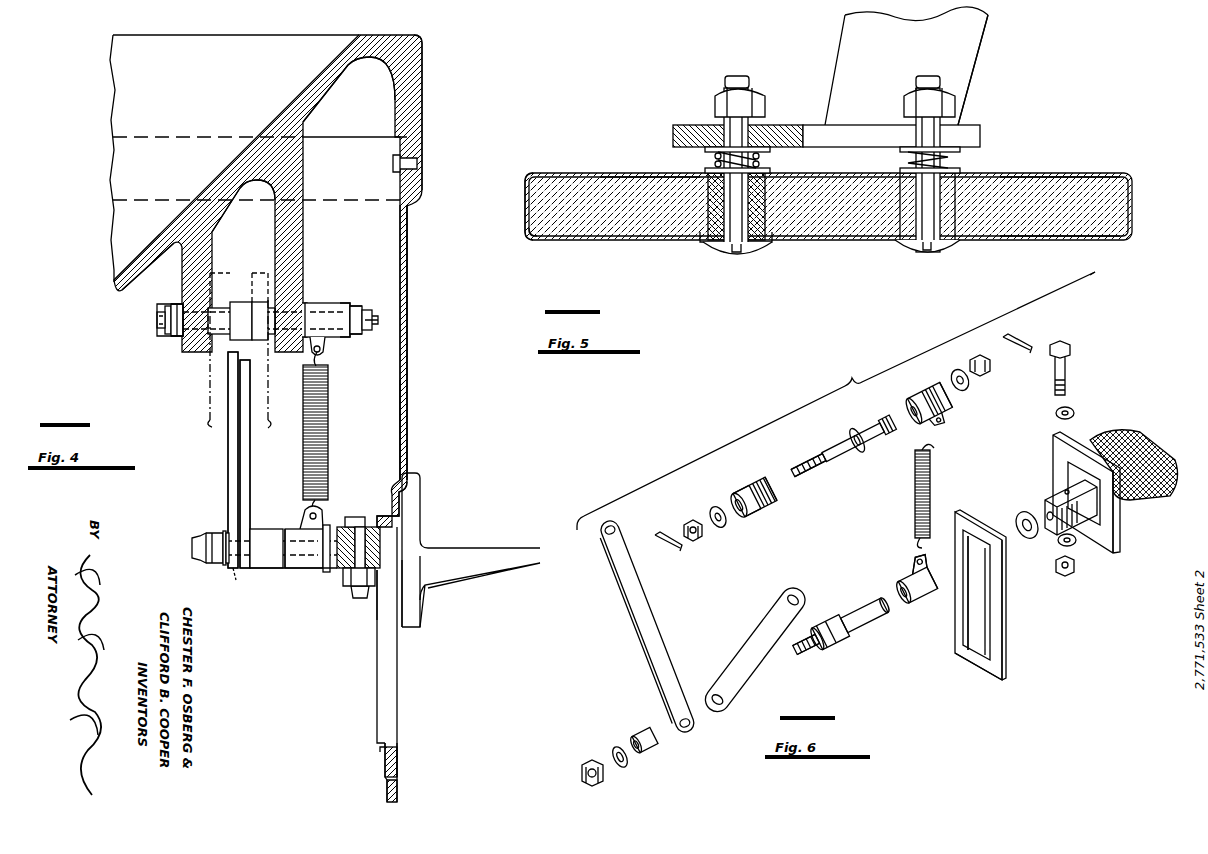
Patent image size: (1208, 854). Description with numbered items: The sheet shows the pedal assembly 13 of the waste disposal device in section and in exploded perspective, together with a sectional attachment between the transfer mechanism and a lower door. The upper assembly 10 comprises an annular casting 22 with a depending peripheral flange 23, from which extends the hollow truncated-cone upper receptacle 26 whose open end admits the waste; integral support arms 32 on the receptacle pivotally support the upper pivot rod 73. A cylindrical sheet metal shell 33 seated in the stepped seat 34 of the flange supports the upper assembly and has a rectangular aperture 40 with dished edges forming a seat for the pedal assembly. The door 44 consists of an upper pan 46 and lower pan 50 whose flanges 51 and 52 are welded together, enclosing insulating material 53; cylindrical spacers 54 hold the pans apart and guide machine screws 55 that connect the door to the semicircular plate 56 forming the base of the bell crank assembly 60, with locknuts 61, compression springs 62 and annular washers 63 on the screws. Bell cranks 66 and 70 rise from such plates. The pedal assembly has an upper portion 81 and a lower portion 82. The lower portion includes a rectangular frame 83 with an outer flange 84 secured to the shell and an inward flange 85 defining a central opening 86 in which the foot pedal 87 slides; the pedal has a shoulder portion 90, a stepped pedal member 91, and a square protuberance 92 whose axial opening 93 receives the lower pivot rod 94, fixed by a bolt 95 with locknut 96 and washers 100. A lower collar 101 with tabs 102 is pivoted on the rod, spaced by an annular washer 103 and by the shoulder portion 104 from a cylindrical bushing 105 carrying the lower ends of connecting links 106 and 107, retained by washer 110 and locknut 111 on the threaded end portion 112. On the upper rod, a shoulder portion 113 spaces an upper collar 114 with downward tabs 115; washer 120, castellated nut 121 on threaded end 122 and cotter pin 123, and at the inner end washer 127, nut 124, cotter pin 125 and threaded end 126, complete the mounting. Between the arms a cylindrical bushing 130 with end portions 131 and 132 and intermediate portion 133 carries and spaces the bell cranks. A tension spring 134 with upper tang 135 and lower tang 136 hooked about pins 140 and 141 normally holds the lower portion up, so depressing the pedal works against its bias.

In FIG. 4, the upper assembly 10 is at (409, 384).
In FIG. 4, the pedal assembly 13 is at (382, 413).
In FIG. 6, the pedal assembly 13 is at (1153, 363).
In FIG. 4, the annular casting 22 is at (270, 31).
In FIG. 4, the peripheral flange 23 is at (422, 104).
In FIG. 4, the upper receptacle 26 is at (150, 247).
In FIG. 4, the support arms 32 is at (214, 232).
In FIG. 4, the sheet metal shell 33 is at (406, 262).
In FIG. 4, the stepped seat 34 is at (392, 150).
In FIG. 4, the rectangular aperture 40 is at (390, 490).
In FIG. 5, the lower door 44 is at (1138, 210).
In FIG. 5, the upper pan 46 is at (1072, 176).
In FIG. 5, the lower pan 50 is at (1045, 240).
In FIG. 5, the downwardly disposed peripheral flange 51 is at (541, 240).
In FIG. 5, the upwardly disposed peripheral flange 52 is at (525, 200).
In FIG. 5, the insulating material 53 is at (648, 238).
In FIG. 5, the cylindrical spacers 54 is at (762, 228).
In FIG. 5, the machine screws 55 is at (745, 255).
In FIG. 5, the semicircular plate 56 is at (673, 128).
In FIG. 5, the bell crank assembly 60 is at (978, 86).
In FIG. 5, the locknuts 61 is at (752, 90).
In FIG. 5, the compression springs 62 is at (715, 158).
In FIG. 5, the annular washers 63 is at (770, 125).
In FIG. 4, the bell crank 66 is at (252, 418).
In FIG. 5, the bell crank 66 is at (975, 58).
In FIG. 4, the bell crank 70 is at (208, 423).
In FIG. 4, the upper pivot rod 73 is at (155, 314).
In FIG. 6, the upper pivot rod 73 is at (834, 446).
In FIG. 4, the upper portion 81 is at (155, 337).
In FIG. 4, the lower portion 82 is at (304, 627).
In FIG. 4, the rectangular frame 83 is at (398, 698).
In FIG. 6, the rectangular frame 83 is at (968, 682).
In FIG. 4, the outer flange 84 is at (400, 762).
In FIG. 6, the outer flange 84 is at (1003, 634).
In FIG. 4, the inwardly disposed flange 85 is at (383, 745).
In FIG. 6, the inwardly disposed flange 85 is at (958, 662).
In FIG. 4, the central rectangular opening 86 is at (377, 652).
In FIG. 6, the central rectangular opening 86 is at (976, 606).
In FIG. 4, the foot pedal 87 is at (422, 500).
In FIG. 6, the foot pedal 87 is at (1156, 510).
In FIG. 4, the shoulder portion 90 is at (404, 580).
In FIG. 6, the shoulder portion 90 is at (1070, 476).
In FIG. 4, the pedal member 91 is at (497, 548).
In FIG. 6, the pedal member 91 is at (1150, 444).
In FIG. 4, the square protuberance 92 is at (378, 575).
In FIG. 6, the square protuberance 92 is at (1080, 530).
In FIG. 6, the axial opening 93 is at (1045, 506).
In FIG. 4, the lower pivot rod 94 is at (262, 576).
In FIG. 6, the lower pivot rod 94 is at (842, 640).
In FIG. 4, the bolt 95 is at (358, 600).
In FIG. 6, the bolt 95 is at (1068, 372).
In FIG. 4, the locknut 96 is at (348, 588).
In FIG. 6, the locknut 96 is at (1070, 575).
In FIG. 4, the washers 100 is at (345, 518).
In FIG. 6, the washers 100 is at (1075, 413).
In FIG. 4, the lower collar 101 is at (290, 570).
In FIG. 6, the lower collar 101 is at (932, 600).
In FIG. 4, the tabs 102 is at (297, 520).
In FIG. 6, the tabs 102 is at (908, 582).
In FIG. 4, the annular washer 103 is at (326, 574).
In FIG. 6, the annular washer 103 is at (1018, 520).
In FIG. 4, the shoulder portion 104 is at (266, 532).
In FIG. 6, the shoulder portion 104 is at (830, 624).
In FIG. 4, the cylindrical bushing 105 is at (233, 578).
In FIG. 6, the cylindrical bushing 105 is at (648, 731).
In FIG. 4, the connecting link 106 is at (252, 470).
In FIG. 6, the connecting link 106 is at (650, 608).
In FIG. 4, the connecting link 107 is at (228, 470).
In FIG. 6, the connecting link 107 is at (755, 612).
In FIG. 4, the annular washer 110 is at (222, 538).
In FIG. 6, the annular washer 110 is at (628, 766).
In FIG. 4, the locknut 111 is at (226, 562).
In FIG. 6, the locknut 111 is at (590, 758).
In FIG. 4, the threaded end portion 112 is at (190, 545).
In FIG. 6, the threaded end portion 112 is at (800, 656).
In FIG. 4, the shoulder portion 113 is at (305, 310).
In FIG. 6, the shoulder portion 113 is at (858, 433).
In FIG. 4, the upper collar 114 is at (312, 303).
In FIG. 6, the upper collar 114 is at (920, 383).
In FIG. 4, the tabs 115 is at (342, 342).
In FIG. 6, the tabs 115 is at (940, 404).
In FIG. 4, the washer 120 is at (353, 335).
In FIG. 6, the washer 120 is at (972, 384).
In FIG. 4, the castellated nut 121 is at (354, 305).
In FIG. 6, the castellated nut 121 is at (978, 357).
In FIG. 4, the threaded outer end portion 122 is at (370, 310).
In FIG. 6, the threaded outer end portion 122 is at (890, 424).
In FIG. 4, the cotter pin 123 is at (380, 320).
In FIG. 6, the cotter pin 123 is at (1022, 347).
In FIG. 4, the castellated nut 124 is at (172, 330).
In FIG. 6, the castellated nut 124 is at (690, 521).
In FIG. 4, the cotter pin 125 is at (160, 323).
In FIG. 6, the cotter pin 125 is at (675, 552).
In FIG. 4, the threaded end portion 126 is at (166, 310).
In FIG. 6, the threaded end portion 126 is at (803, 470).
In FIG. 4, the washer 127 is at (178, 305).
In FIG. 6, the washer 127 is at (720, 507).
In FIG. 4, the cylindrical bushing 130 is at (236, 300).
In FIG. 6, the cylindrical bushing 130 is at (748, 485).
In FIG. 4, the end portion 131 is at (222, 340).
In FIG. 6, the end portion 131 is at (748, 516).
In FIG. 4, the end portion 132 is at (262, 340).
In FIG. 6, the end portion 132 is at (766, 480).
In FIG. 4, the intermediate portion 133 is at (256, 300).
In FIG. 6, the intermediate portion 133 is at (770, 506).
In FIG. 4, the tension spring 134 is at (328, 446).
In FIG. 6, the tension spring 134 is at (916, 488).
In FIG. 4, the upper tang 135 is at (310, 358).
In FIG. 6, the upper tang 135 is at (930, 448).
In FIG. 4, the lower tang 136 is at (318, 507).
In FIG. 6, the lower tang 136 is at (918, 540).
In FIG. 4, the pin 140 is at (322, 353).
In FIG. 6, the pin 140 is at (932, 422).
In FIG. 4, the pin 141 is at (309, 530).
In FIG. 6, the pin 141 is at (932, 573).